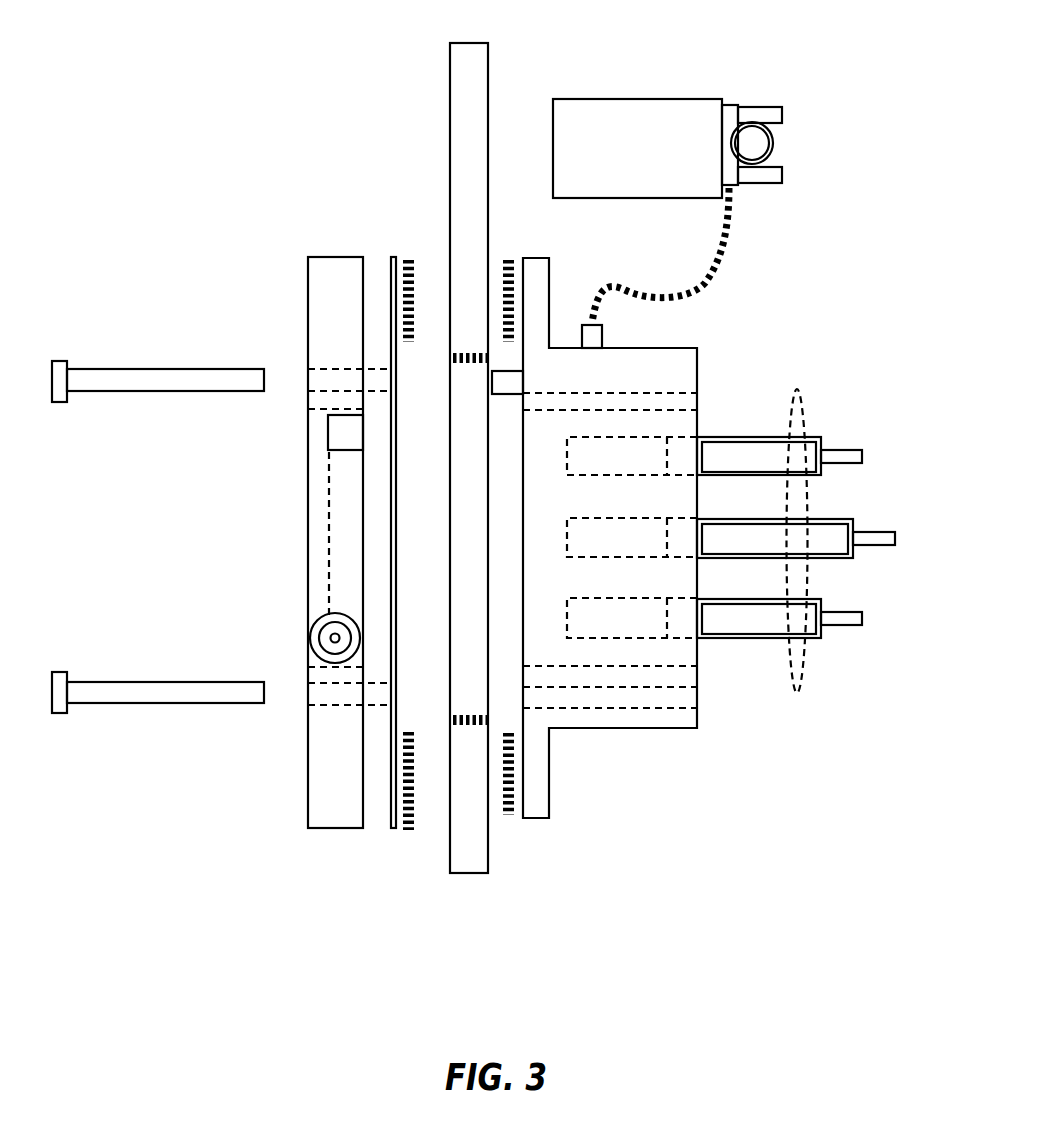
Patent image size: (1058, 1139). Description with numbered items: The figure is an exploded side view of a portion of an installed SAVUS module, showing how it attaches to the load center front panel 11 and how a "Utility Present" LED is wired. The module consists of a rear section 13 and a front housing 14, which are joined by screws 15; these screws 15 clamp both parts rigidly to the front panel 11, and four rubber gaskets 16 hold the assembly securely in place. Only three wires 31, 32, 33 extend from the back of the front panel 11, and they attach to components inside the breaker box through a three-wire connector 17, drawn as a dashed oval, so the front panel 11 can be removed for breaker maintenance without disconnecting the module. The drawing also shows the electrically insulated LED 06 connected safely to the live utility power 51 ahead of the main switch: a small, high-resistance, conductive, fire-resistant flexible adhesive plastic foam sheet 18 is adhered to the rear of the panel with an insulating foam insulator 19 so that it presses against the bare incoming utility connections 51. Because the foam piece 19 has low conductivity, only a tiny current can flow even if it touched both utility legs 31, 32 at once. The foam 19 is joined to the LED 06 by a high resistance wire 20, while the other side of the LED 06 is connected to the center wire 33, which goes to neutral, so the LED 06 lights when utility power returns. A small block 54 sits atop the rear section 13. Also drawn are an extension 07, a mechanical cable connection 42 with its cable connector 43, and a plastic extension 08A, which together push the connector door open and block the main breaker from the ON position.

The load center front panel 11 is at (475, 70).
The front housing 14 is at (340, 257).
The screws 15 is at (130, 382).
The rubber gaskets 16 is at (408, 258).
The LED 06 is at (510, 382).
The extension 07 is at (343, 437).
The plastic extension 08A is at (333, 634).
The mechanical cable connection 42 is at (317, 637).
The cable connector 43 is at (340, 663).
The rear section 13 is at (680, 348).
The connector 54 is at (598, 337).
The insulating foam insulator 19 is at (638, 115).
The conductive fire resistant flexible adhesive plastic foam sheet 18 is at (732, 115).
The live utility power 51 is at (777, 148).
The high resistance wire 20 is at (722, 258).
The wire 31 is at (847, 450).
The wire 32 is at (850, 626).
The center wire 33 is at (885, 545).
The 3-wire connector 17 is at (792, 686).